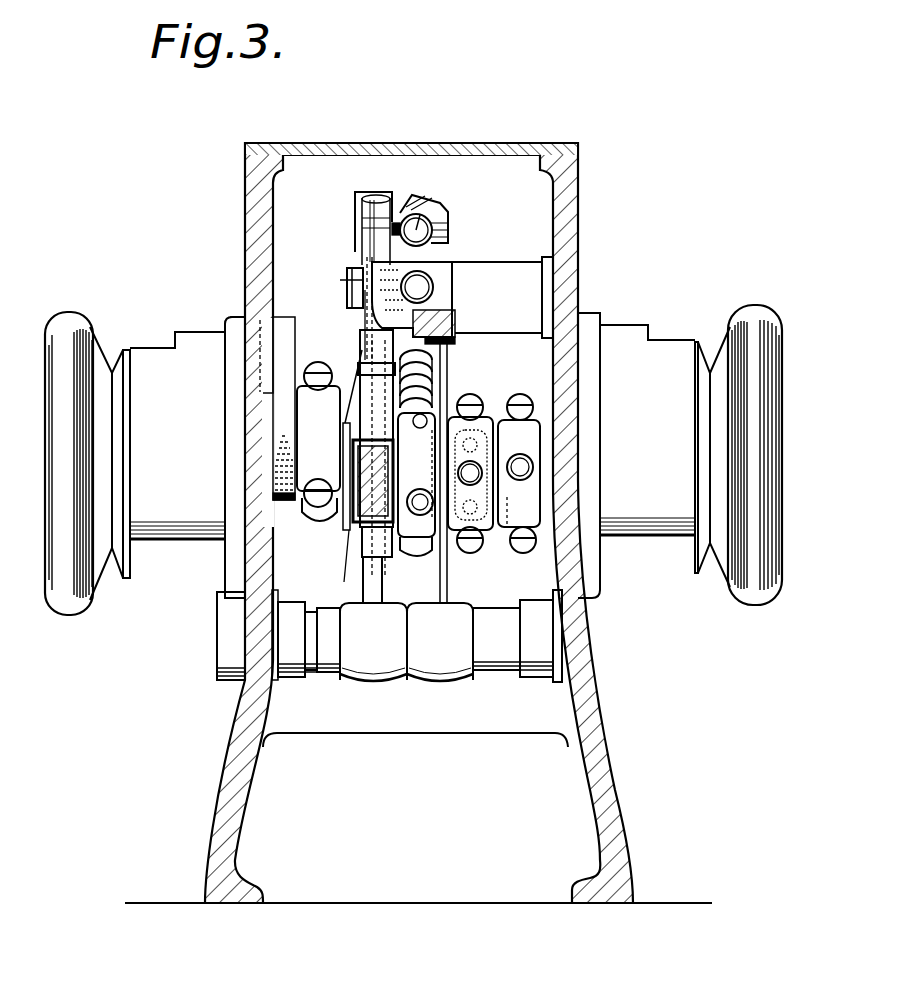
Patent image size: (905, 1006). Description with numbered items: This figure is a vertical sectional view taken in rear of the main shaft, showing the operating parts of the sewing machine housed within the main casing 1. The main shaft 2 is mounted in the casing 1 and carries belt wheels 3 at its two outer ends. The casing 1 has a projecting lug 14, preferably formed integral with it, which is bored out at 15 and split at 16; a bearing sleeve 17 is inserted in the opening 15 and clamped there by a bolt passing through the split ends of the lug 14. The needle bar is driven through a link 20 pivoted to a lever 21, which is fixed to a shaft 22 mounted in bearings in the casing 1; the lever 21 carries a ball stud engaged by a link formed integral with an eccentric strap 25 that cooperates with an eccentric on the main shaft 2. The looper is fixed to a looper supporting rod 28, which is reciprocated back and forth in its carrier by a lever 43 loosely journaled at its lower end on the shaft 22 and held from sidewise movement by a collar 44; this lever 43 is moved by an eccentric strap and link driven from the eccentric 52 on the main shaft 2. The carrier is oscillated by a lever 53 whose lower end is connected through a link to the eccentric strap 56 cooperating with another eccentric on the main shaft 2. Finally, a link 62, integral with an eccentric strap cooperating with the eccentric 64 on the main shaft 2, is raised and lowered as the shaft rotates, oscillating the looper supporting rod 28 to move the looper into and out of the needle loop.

The main casing 1 is at (572, 638).
The main shaft 2 is at (560, 440).
The belt wheels 3 is at (67, 328).
The projecting lug 14 is at (503, 273).
The bore 15 is at (432, 268).
The split 16 is at (347, 283).
The bearing sleeve 17 is at (435, 292).
The link 20 is at (455, 333).
The lever 21 is at (445, 379).
The shaft 22 is at (455, 678).
The eccentric strap 25 is at (460, 545).
The looper supporting rod 28 is at (418, 221).
The lever 43 is at (358, 365).
The collar 44 is at (334, 670).
The eccentric 52 is at (415, 500).
The lever 53 is at (380, 580).
The eccentric strap 56 is at (312, 425).
The link 62 is at (375, 330).
The eccentric 64 is at (365, 540).